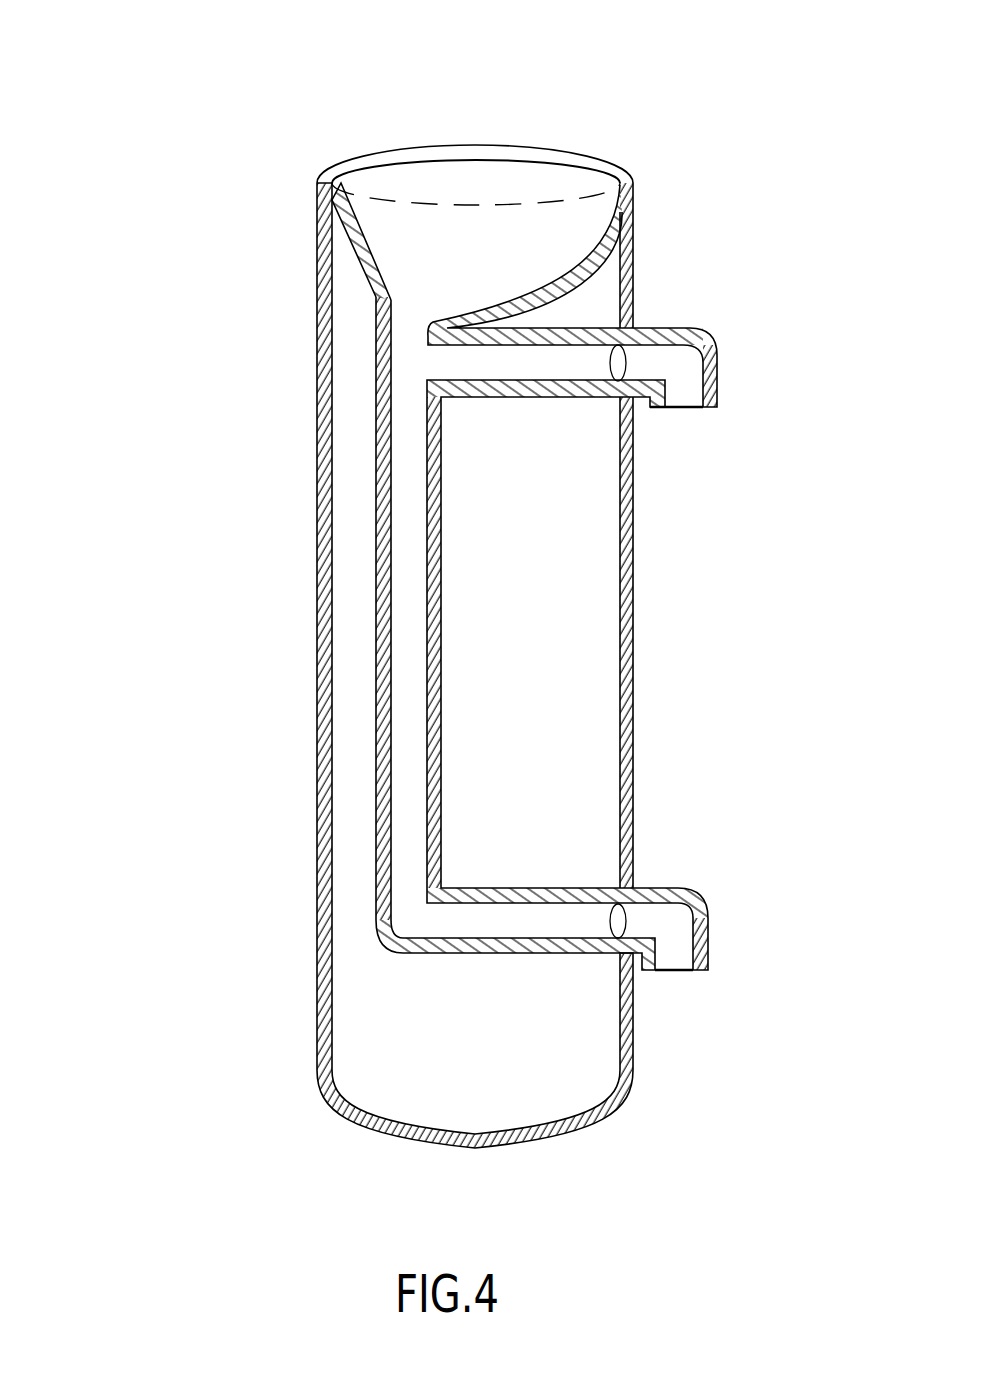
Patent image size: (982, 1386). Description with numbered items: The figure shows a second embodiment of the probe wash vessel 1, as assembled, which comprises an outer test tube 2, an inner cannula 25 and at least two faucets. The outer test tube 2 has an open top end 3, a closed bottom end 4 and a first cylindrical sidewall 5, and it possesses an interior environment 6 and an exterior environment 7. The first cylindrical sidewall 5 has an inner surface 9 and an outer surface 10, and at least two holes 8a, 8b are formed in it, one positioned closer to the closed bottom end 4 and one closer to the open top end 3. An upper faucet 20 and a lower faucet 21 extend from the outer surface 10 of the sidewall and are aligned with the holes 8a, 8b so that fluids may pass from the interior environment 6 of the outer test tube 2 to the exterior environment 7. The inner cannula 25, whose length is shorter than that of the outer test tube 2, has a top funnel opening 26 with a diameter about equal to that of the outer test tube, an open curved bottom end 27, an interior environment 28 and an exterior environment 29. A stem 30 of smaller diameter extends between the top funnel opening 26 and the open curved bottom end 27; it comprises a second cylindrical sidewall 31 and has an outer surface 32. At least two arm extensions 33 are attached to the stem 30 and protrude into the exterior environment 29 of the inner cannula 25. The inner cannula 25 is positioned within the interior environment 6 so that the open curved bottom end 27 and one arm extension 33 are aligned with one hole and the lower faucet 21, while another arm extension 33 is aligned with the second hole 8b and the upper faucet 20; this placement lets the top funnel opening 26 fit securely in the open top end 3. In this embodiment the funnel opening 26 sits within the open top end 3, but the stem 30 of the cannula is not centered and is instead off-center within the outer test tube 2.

The probe wash vessel 1 is at (451, 634).
The outer test tube 2 is at (424, 192).
The open top end 3 is at (396, 116).
The closed bottom end 4 is at (537, 1162).
The first cylindrical sidewall 5 is at (619, 675).
The interior environment 6 is at (340, 301).
The exterior environment 7 is at (308, 818).
The hole 8a is at (620, 372).
The hole 8b is at (620, 912).
The inner surface 9 is at (350, 400).
The outer surface 10 is at (255, 626).
The upper faucet 20 is at (722, 360).
The lower faucet 21 is at (712, 930).
The inner cannula 25 is at (619, 675).
The top funnel opening 26 is at (569, 175).
The open curved bottom end 27 is at (423, 970).
The interior environment 28 is at (420, 822).
The exterior environment 29 is at (441, 762).
The stem 30 is at (446, 688).
The second cylindrical sidewall 31 is at (406, 893).
The outer surface 32 is at (364, 917).
The arm extension 33 is at (496, 328).